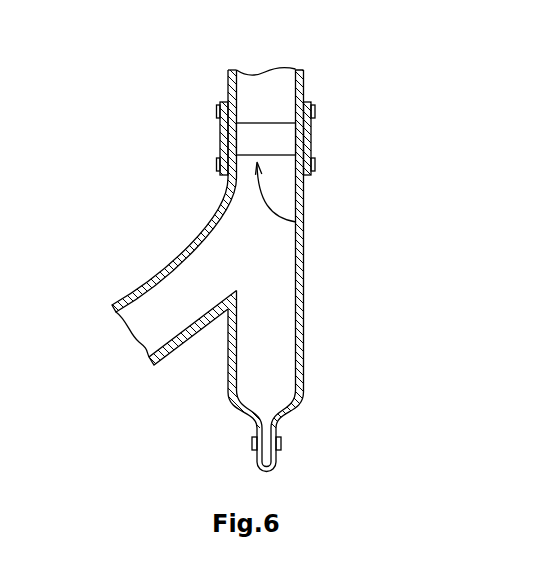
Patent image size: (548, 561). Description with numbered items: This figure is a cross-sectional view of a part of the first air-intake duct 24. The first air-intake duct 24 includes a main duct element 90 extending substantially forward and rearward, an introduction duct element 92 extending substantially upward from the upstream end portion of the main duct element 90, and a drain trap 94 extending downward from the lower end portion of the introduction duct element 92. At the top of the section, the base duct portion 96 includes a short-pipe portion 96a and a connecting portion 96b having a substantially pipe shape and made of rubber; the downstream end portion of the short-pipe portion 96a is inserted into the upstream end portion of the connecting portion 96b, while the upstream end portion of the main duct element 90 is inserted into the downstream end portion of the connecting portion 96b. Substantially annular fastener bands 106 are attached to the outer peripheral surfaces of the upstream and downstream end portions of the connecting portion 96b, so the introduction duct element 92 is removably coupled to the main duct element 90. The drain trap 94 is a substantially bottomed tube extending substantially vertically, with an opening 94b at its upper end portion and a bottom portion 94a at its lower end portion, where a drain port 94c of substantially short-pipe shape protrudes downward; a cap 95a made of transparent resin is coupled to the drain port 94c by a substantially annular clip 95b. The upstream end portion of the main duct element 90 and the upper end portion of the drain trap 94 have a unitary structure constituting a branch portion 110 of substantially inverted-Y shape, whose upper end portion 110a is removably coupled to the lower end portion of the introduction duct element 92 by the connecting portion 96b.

The first air-intake duct 24 is at (155, 211).
The main duct element 90 is at (120, 283).
The introduction duct element 92 is at (212, 64).
The drain trap 94 is at (322, 319).
The bottom portion 94a is at (292, 427).
The opening 94b is at (300, 222).
The drain port 94c is at (280, 460).
The cap 95a is at (273, 475).
The clip 95b is at (252, 442).
The base duct portion 96 is at (458, 67).
The short-pipe portion 96a is at (303, 85).
The connecting portion 96b is at (310, 128).
The fastener bands 106 is at (218, 110).
The branch portion 110 is at (248, 240).
The upper end portion of the branch portion 110a is at (302, 200).